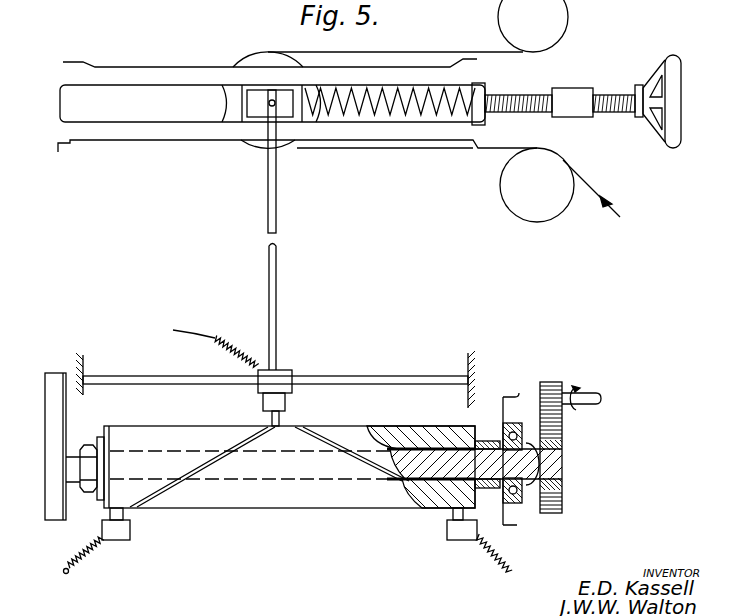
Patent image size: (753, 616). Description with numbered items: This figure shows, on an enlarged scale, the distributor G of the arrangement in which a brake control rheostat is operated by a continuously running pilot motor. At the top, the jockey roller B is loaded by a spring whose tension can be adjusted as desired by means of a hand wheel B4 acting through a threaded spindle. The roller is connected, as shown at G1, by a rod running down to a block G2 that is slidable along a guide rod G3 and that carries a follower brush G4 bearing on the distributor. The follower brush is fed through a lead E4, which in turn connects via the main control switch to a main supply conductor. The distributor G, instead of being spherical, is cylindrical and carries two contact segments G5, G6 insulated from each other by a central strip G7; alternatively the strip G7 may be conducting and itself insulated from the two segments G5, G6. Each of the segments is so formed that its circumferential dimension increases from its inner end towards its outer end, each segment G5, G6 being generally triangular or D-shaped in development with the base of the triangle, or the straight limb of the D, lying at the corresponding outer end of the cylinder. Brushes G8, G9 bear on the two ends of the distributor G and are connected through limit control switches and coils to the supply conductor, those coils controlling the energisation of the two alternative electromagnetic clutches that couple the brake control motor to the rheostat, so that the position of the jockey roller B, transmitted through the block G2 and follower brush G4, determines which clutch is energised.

The jockey roller B is at (258, 62).
The hand wheel B4 is at (665, 60).
The connection G1 is at (277, 268).
The lead E4 is at (215, 340).
The block G2 is at (273, 384).
The guide rod G3 is at (342, 381).
The distributor G is at (165, 418).
The contact segment G5 is at (184, 440).
The follower brush G4 is at (281, 418).
The contact segment G6 is at (335, 435).
The central strip G7 is at (323, 490).
The brush G8 is at (124, 514).
The brush G9 is at (448, 518).